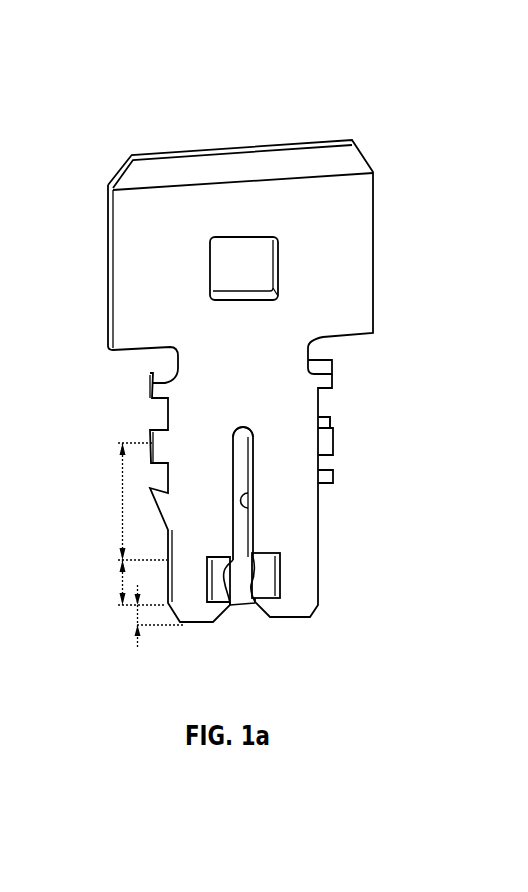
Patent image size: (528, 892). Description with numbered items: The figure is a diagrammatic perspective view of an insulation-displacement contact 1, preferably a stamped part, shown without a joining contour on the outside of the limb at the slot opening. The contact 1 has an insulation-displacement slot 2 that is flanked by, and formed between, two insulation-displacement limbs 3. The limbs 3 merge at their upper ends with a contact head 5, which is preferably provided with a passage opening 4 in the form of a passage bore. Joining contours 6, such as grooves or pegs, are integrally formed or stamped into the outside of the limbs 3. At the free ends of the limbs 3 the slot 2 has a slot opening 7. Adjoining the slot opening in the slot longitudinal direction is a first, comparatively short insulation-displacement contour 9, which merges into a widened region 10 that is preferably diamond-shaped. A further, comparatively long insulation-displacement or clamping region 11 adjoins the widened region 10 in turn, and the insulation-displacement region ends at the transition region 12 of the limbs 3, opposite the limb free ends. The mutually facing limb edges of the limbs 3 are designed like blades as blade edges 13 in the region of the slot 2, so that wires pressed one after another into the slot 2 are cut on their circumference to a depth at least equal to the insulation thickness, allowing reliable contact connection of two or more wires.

The insulation-displacement contact 1 is at (247, 368).
The insulation-displacement slot 2 is at (214, 457).
The insulation-displacement limbs 3 is at (203, 460).
The passage opening 4 is at (247, 273).
The contact head 5 is at (283, 261).
The joining contours 6 is at (335, 378).
The slot opening 7 is at (240, 597).
The first insulation-displacement contour 9 is at (137, 620).
The widened region 10 is at (120, 583).
The clamping region 11 is at (120, 502).
The transition region 12 is at (243, 430).
The blade edges 13 is at (250, 510).